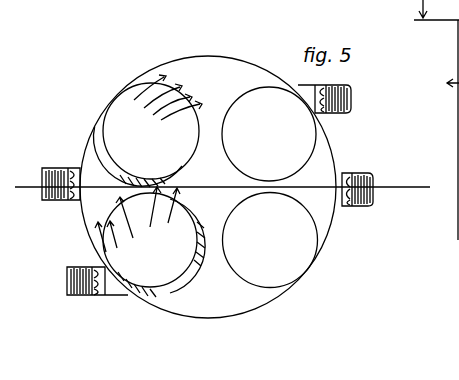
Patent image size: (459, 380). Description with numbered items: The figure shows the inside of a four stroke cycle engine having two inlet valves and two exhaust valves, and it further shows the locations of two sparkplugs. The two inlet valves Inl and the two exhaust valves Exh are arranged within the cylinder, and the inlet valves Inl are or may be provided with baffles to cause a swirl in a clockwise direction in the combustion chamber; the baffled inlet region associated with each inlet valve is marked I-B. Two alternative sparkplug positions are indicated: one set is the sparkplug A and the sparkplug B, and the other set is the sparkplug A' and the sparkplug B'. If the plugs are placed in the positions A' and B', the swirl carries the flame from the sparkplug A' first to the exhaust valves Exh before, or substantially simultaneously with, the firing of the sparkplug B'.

The exhaust valve Exh is at (270, 187).
The inlet valve Inl is at (148, 181).
The inlet bypass passage I-B is at (127, 185).
The sparkplug B is at (61, 175).
The sparkplug B' is at (97, 292).
The sparkplug A' is at (334, 99).
The sparkplug A is at (362, 181).